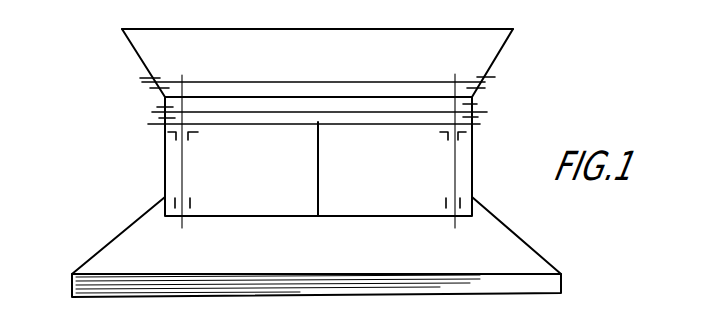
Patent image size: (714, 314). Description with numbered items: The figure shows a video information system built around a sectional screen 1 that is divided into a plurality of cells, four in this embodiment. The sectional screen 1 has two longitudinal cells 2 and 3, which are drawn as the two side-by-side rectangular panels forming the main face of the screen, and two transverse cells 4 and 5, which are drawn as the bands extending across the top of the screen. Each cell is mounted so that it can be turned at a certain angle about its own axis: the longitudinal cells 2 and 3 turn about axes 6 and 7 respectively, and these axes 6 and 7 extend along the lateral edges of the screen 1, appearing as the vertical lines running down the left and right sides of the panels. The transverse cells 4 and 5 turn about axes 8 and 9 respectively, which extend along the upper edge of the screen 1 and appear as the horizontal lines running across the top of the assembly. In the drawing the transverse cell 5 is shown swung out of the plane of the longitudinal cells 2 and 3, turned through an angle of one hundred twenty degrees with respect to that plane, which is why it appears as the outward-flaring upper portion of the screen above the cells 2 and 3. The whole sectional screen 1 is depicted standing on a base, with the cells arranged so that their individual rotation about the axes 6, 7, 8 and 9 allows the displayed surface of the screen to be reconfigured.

The sectional screen 1 is at (500, 23).
The longitudinal cell 2 is at (243, 207).
The longitudinal cell 3 is at (398, 206).
The transverse cell 4 is at (416, 117).
The transverse cell 5 is at (488, 50).
The axis 6 is at (183, 167).
The axis 7 is at (453, 167).
The axis 8 is at (383, 113).
The axis 9 is at (304, 82).